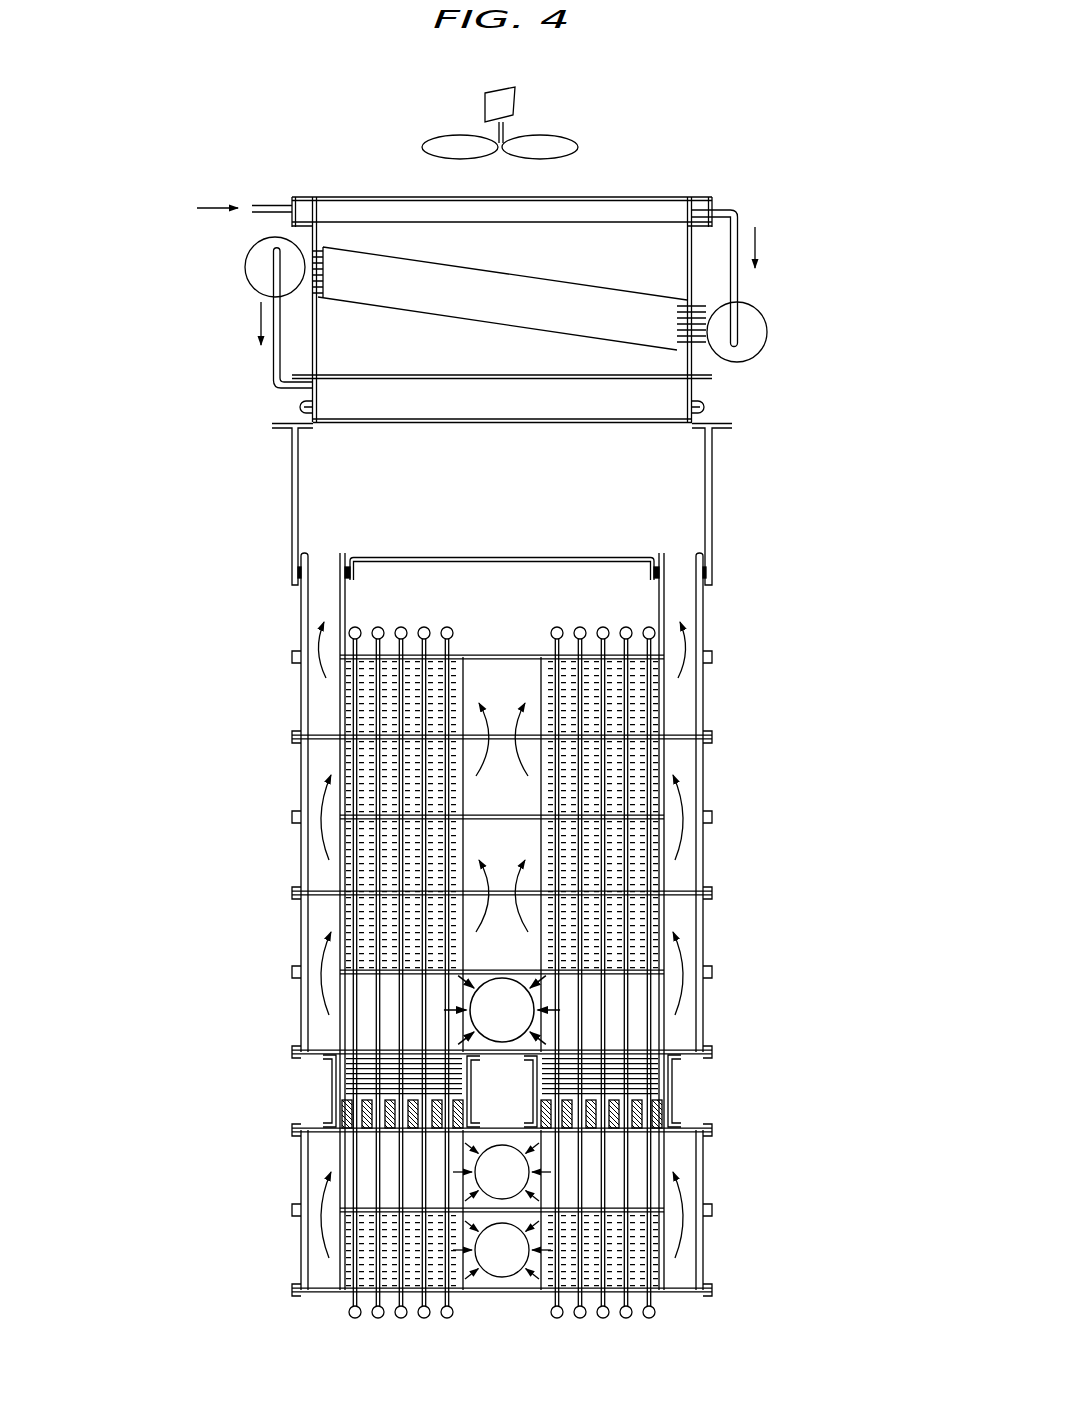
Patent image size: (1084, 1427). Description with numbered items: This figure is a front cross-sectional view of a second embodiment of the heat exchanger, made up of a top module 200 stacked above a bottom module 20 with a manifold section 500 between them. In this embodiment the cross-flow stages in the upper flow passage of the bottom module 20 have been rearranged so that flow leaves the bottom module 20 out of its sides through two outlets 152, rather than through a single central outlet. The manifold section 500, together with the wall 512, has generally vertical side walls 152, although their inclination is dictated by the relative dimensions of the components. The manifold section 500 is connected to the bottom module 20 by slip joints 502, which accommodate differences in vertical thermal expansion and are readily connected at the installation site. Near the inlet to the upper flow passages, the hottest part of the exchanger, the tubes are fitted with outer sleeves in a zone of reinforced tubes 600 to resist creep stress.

The top module 200 is at (197, 183).
The bottom module 20 is at (197, 1300).
The manifold section 500 is at (290, 486).
The shroud wall 512 is at (712, 480).
The slip joint 502 is at (305, 555).
The outlet 152 is at (323, 598).
The zone of reinforced tubes 600 is at (743, 895).